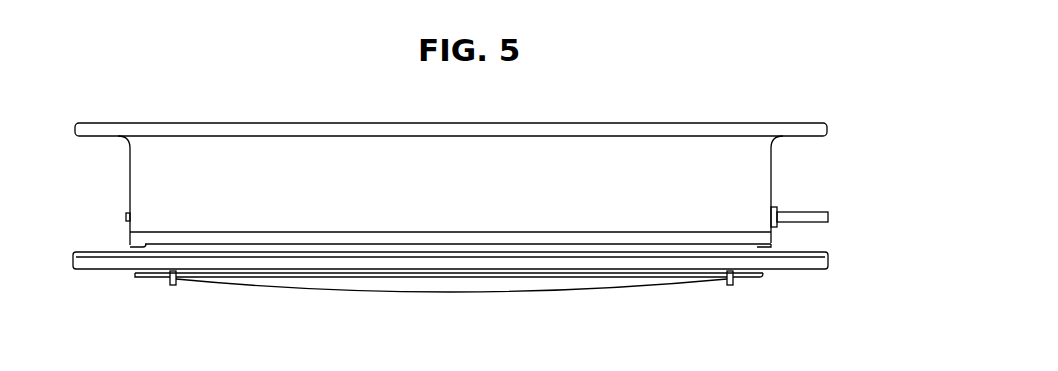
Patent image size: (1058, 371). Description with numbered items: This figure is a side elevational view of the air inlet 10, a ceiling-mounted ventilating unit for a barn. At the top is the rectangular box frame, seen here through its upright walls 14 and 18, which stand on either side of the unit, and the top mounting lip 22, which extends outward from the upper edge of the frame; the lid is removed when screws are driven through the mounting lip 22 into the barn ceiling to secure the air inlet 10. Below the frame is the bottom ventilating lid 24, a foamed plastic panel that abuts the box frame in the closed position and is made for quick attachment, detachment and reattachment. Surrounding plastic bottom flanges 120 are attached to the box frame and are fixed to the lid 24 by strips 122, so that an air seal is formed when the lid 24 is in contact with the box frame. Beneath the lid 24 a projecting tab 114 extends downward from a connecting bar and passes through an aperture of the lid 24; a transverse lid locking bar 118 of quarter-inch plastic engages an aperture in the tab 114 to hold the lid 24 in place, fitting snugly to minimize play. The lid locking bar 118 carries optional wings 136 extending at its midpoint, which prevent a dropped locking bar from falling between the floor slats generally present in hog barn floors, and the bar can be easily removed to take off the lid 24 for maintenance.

The air inlet 10 is at (450, 156).
The top mounting lip 22 is at (798, 123).
The upright wall 14 is at (128, 181).
The upright wall 18 is at (775, 168).
The bottom flanges 120 is at (128, 239).
The strips 122 is at (137, 251).
The bottom ventilating lid 24 is at (768, 273).
The wings 136 is at (450, 275).
The projecting tab 114 is at (171, 287).
The lid locking bar 118 is at (357, 288).